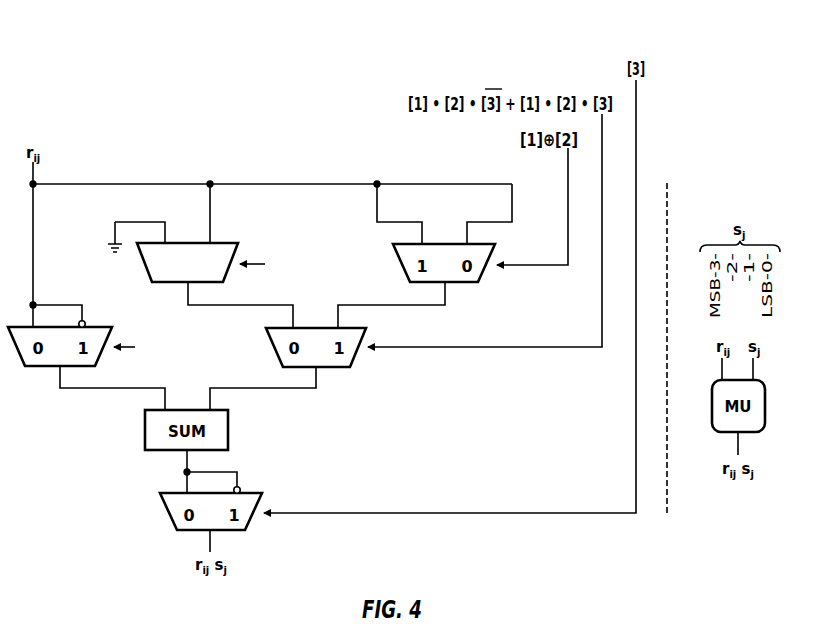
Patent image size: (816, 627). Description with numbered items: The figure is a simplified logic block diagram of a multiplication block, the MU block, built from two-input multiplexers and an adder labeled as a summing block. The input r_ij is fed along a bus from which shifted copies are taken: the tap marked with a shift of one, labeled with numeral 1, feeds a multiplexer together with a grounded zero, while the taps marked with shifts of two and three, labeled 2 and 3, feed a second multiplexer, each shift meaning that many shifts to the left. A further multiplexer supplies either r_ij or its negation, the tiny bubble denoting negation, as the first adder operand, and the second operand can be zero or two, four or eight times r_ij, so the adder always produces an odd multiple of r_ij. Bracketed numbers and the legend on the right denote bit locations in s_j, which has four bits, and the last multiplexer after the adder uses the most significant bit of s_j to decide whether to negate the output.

The shift-by-one path 1 is at (192, 231).
The shift-by-two path 2 is at (398, 212).
The shift-by-three path 3 is at (507, 214).